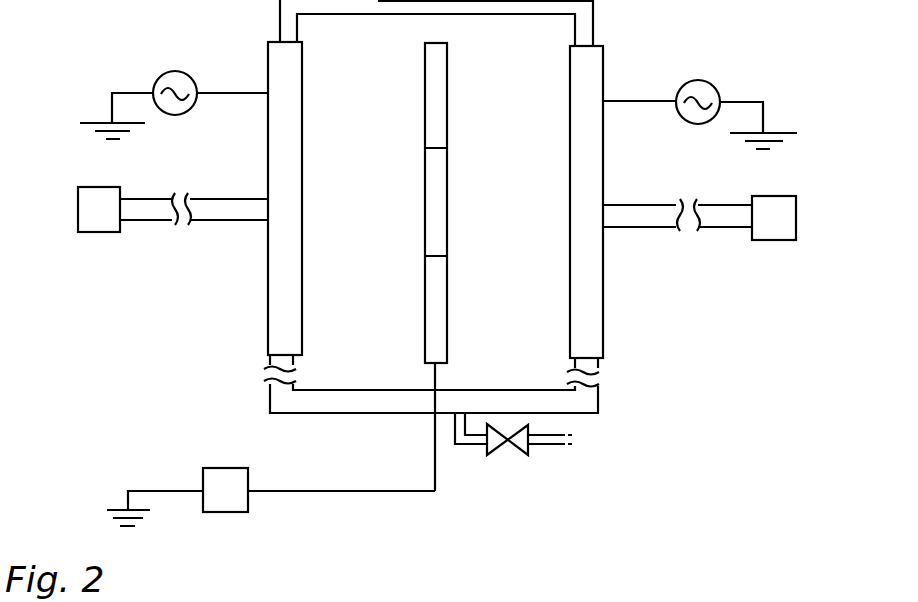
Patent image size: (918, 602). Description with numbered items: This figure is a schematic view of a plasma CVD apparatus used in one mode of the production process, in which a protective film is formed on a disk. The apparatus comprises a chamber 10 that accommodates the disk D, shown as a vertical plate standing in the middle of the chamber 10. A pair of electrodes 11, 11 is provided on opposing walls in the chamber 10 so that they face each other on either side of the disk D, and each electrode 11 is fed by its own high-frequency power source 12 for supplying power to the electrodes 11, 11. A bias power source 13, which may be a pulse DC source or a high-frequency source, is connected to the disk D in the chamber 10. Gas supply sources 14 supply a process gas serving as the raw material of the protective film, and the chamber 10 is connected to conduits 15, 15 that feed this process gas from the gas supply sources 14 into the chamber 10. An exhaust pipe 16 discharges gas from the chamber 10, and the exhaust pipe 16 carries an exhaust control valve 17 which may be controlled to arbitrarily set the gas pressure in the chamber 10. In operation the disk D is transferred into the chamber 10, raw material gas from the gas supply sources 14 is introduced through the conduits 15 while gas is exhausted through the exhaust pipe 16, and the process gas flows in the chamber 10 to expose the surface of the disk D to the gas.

The chamber 10 is at (592, 22).
The electrode 11 is at (268, 156).
The high-frequency power source 12 is at (184, 80).
The bias power source 13 is at (235, 468).
The gas supply source 14 is at (95, 232).
The conduit 15 is at (228, 221).
The exhaust pipe 16 is at (462, 448).
The exhaust control valve 17 is at (522, 455).
The disk D is at (426, 296).